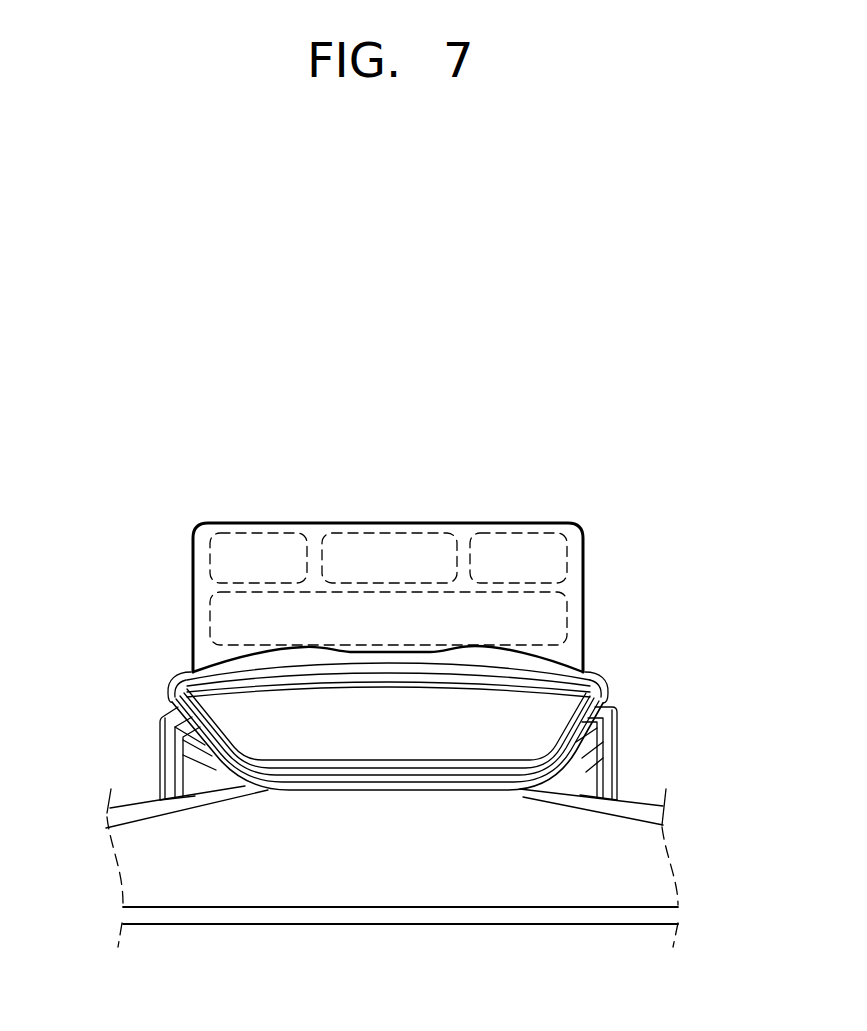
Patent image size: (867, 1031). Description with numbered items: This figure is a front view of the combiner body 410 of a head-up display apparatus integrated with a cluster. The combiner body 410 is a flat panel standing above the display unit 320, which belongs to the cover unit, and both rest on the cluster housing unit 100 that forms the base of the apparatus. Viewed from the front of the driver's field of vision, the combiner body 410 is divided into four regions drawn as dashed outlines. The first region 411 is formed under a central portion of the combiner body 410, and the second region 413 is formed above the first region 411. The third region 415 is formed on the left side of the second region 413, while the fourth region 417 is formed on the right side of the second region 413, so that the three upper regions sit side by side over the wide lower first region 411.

The cluster housing unit 100 is at (637, 807).
The display unit 320 is at (498, 725).
The combiner body 410 is at (497, 411).
The first region 411 is at (402, 620).
The second region 413 is at (360, 548).
The third region 415 is at (263, 553).
The fourth region 417 is at (513, 552).